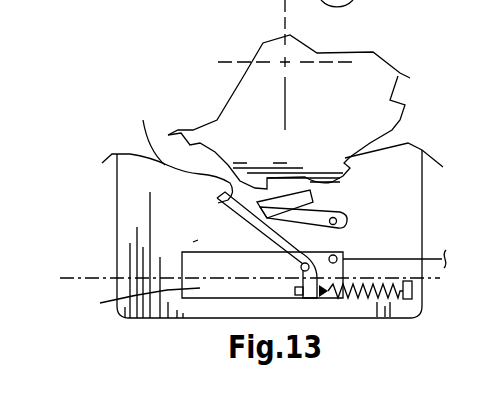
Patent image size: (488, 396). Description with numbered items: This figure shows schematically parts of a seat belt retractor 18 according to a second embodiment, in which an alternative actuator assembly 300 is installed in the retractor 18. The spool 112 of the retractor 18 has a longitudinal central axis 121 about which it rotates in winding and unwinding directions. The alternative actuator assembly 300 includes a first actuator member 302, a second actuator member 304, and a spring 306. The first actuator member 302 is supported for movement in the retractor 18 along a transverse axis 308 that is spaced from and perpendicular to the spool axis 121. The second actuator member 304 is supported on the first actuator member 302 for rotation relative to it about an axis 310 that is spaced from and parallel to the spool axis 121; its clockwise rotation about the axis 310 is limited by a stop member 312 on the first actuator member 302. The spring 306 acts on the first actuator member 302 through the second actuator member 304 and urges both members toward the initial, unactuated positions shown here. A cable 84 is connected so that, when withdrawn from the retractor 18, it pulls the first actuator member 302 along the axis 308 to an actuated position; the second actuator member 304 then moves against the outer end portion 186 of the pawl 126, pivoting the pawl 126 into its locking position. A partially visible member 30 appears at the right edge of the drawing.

The retractor 18 is at (100, 176).
The longitudinal central axis 121 is at (286, 60).
The spool 112 is at (412, 120).
The outer end portion 186 is at (350, 168).
The second actuator member 304 is at (142, 129).
The pawl 126 is at (352, 208).
The cable 84 is at (387, 259).
The frame member 30 is at (466, 249).
The alternative actuator assembly 300 is at (146, 219).
The axis 310 is at (298, 268).
The transverse axis 308 is at (90, 278).
The first actuator member 302 is at (100, 303).
The stop member 312 is at (297, 291).
The spring 306 is at (362, 296).